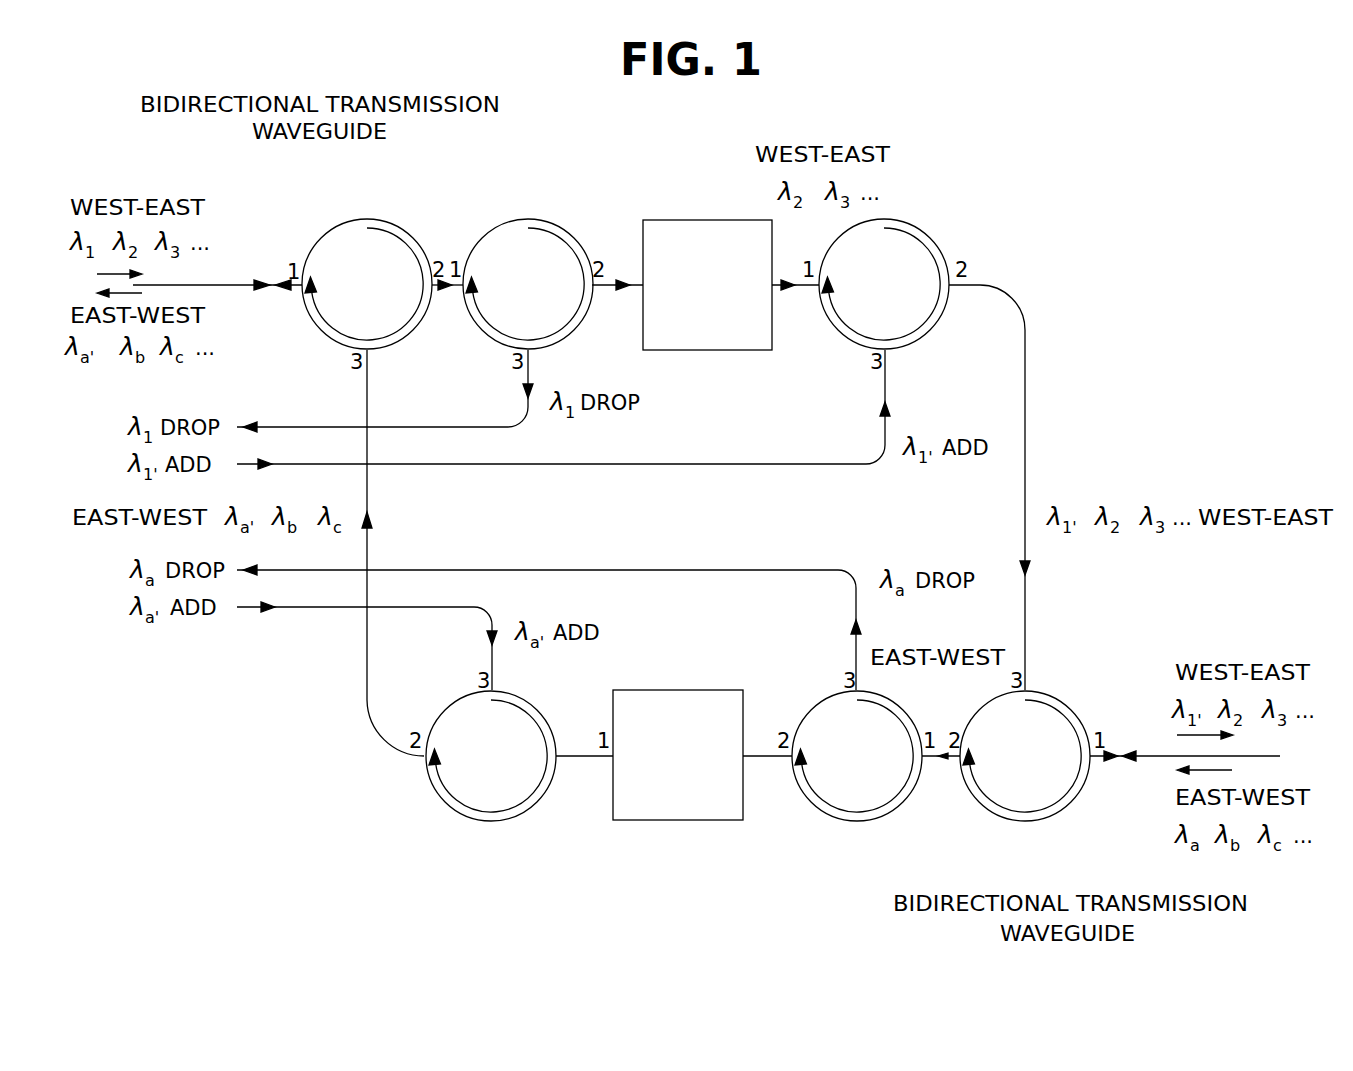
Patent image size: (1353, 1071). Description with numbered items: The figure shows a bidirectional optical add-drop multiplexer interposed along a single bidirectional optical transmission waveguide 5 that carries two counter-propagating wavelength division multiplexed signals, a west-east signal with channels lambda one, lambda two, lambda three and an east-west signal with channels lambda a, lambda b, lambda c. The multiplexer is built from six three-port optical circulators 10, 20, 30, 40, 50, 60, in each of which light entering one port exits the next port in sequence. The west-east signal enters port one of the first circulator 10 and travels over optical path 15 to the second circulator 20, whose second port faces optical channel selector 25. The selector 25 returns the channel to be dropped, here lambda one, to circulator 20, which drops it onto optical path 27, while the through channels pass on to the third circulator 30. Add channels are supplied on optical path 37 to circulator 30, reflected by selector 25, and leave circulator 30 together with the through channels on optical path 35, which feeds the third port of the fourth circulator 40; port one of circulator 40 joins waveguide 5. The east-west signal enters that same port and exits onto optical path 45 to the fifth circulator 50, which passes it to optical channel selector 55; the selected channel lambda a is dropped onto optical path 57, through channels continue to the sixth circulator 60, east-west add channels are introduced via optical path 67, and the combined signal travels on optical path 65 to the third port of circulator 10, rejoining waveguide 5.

The bidirectional optical transmission waveguide 5 is at (268, 285).
The first optical circulator 10 is at (367, 263).
The optical path 15 is at (431, 322).
The second optical circulator 20 is at (534, 294).
The optical channel selector 25 is at (707, 302).
The optical path 27 is at (385, 391).
The third optical circulator 30 is at (889, 269).
The optical path 35 is at (1018, 487).
The optical path 37 is at (563, 409).
The fourth optical circulator 40 is at (1025, 739).
The optical path 45 is at (928, 804).
The fifth optical circulator 50 is at (857, 779).
The optical channel selector 55 is at (678, 780).
The optical path 57 is at (549, 603).
The sixth optical circulator 60 is at (491, 779).
The optical path 65 is at (381, 574).
The optical path 67 is at (367, 646).